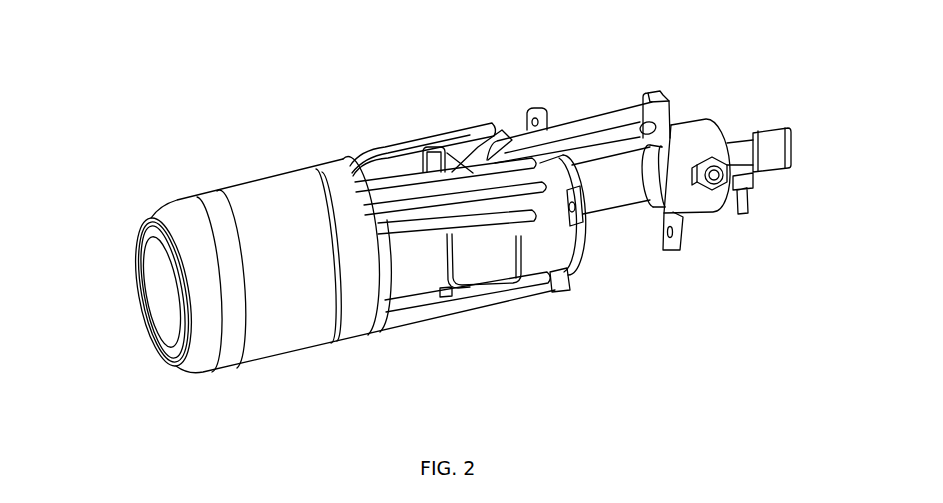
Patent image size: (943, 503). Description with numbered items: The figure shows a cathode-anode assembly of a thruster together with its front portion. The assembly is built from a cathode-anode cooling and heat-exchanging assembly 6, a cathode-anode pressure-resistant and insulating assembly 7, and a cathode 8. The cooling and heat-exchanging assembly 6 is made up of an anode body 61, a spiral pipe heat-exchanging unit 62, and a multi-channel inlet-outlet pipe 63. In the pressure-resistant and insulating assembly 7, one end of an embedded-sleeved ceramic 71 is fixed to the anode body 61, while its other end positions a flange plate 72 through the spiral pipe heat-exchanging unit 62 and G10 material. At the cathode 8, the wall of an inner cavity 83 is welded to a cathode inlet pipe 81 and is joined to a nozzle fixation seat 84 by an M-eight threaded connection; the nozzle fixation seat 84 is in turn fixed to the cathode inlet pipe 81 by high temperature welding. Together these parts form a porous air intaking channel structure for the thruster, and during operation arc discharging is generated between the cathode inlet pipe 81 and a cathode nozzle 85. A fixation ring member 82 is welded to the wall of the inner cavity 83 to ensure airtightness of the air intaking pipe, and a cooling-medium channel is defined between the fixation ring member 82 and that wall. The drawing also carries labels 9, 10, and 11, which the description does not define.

The cathode-anode cooling and heat-exchanging assembly 6 is at (152, 217).
The cathode-anode pressure-resistant and insulating assembly 7 is at (210, 215).
The cap body 10 is at (253, 218).
The cage housing 9 is at (410, 283).
The top bar 11 is at (410, 150).
The cathode 8 is at (607, 173).
The anode body 61 is at (490, 270).
The multi-channel inlet-outlet pipe 63 is at (537, 193).
The cathode nozzle 85 is at (175, 352).
The inner cavity 83 is at (173, 285).
The embedded-sleeved ceramic 71 is at (337, 242).
The nozzle fixation seat 84 is at (352, 240).
The spiral pipe heat-exchanging unit 62 is at (451, 153).
The flange plate 72 is at (530, 138).
The fixation ring member 82 is at (663, 217).
The cathode inlet pipe 81 is at (713, 180).